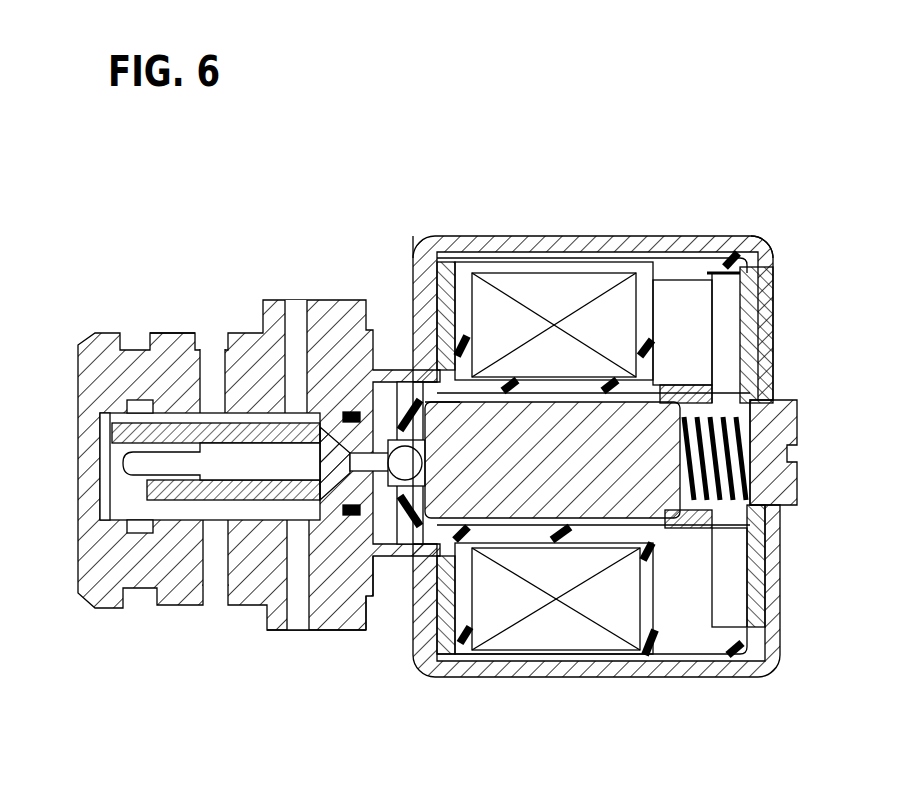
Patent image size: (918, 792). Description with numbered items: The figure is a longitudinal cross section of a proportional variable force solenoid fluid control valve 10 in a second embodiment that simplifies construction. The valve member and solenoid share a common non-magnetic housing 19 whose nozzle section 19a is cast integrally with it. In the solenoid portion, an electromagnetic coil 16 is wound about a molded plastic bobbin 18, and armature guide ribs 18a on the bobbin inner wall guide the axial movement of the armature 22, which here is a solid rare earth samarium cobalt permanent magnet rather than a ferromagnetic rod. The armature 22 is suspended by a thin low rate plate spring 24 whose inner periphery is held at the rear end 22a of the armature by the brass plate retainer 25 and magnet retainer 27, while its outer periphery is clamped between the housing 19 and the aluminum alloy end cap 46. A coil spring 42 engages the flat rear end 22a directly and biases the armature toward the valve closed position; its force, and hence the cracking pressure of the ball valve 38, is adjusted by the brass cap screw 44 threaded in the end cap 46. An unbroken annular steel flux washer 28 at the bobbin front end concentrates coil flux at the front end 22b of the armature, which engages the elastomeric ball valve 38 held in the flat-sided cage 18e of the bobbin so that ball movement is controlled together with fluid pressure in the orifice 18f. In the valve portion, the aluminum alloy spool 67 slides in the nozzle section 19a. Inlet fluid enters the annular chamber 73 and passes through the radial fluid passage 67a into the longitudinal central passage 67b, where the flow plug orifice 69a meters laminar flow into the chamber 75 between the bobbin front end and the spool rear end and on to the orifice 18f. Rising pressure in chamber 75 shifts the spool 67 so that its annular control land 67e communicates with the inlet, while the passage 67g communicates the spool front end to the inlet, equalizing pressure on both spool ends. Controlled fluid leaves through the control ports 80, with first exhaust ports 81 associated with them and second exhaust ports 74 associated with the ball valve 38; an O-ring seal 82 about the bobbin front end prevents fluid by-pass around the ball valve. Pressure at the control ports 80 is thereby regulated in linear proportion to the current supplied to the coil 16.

The proportional variable force fluid control valve 10 is at (743, 154).
The electromagnetic coil 16 is at (537, 285).
The bobbin 18 is at (643, 665).
The armature guide ribs 18a is at (490, 380).
The cage 18e is at (418, 441).
The orifice 18f is at (415, 483).
The housing 19 is at (765, 680).
The housing nozzle section 19a is at (173, 332).
The armature 22 is at (575, 413).
The rear end of armature 22a is at (703, 620).
The front end of armature 22b is at (397, 412).
The plate spring 24 is at (690, 385).
The plate retainer 25 is at (712, 515).
The magnet retainer 27 is at (768, 262).
The flux washer 28 is at (457, 663).
The ball valve 38 is at (360, 370).
The coil spring 42 is at (743, 473).
The cap screw 44 is at (787, 408).
The end cap 46 is at (770, 562).
The spool 67 is at (120, 515).
The radial fluid passage 67a is at (133, 495).
The longitudinal central passage 67b is at (236, 455).
The annular spool control land 67e is at (187, 410).
The passage 67g is at (113, 430).
The orifice 69a is at (333, 635).
The annular chamber 73 is at (147, 405).
The second exhaust ports 74 is at (400, 585).
The chamber 75 is at (330, 437).
The control ports 80 is at (213, 590).
The first exhaust ports 81 is at (289, 637).
The O-ring seal 82 is at (360, 635).